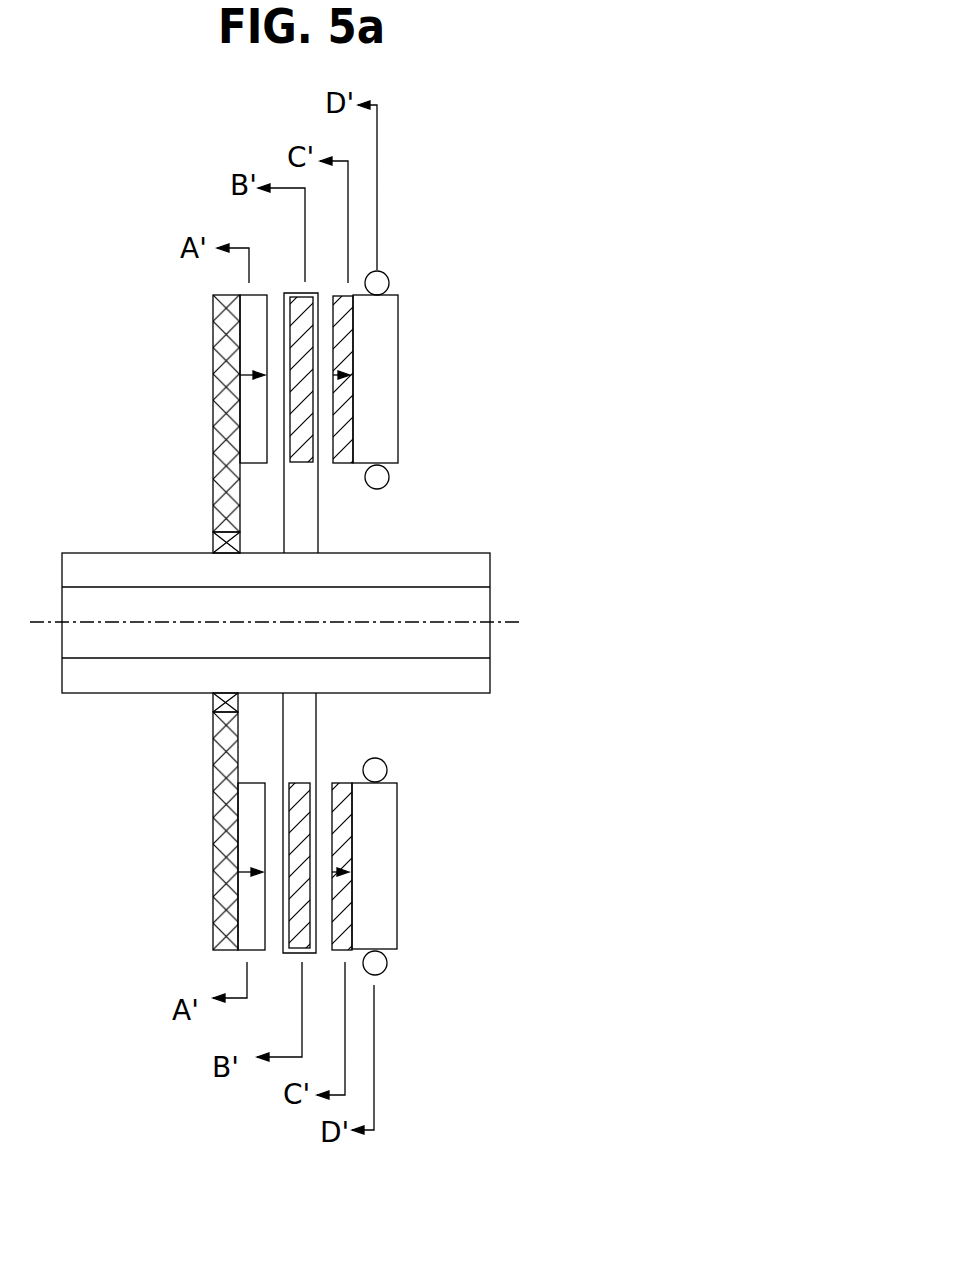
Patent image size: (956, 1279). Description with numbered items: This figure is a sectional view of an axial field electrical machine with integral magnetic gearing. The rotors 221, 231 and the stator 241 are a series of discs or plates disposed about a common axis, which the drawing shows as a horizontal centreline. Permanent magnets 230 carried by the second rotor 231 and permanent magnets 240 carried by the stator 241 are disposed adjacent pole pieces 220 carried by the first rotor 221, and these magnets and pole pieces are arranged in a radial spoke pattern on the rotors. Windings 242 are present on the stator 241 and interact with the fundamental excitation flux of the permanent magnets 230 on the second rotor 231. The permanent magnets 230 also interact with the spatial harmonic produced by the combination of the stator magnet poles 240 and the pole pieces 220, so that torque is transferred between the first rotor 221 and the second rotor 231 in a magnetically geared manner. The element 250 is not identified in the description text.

The pole pieces 220 is at (305, 455).
The first rotor 221 is at (300, 728).
The permanent magnets 230 is at (248, 357).
The second rotor 231 is at (203, 470).
The permanent magnets 240 is at (348, 357).
The stator 241 is at (388, 415).
The windings 242 is at (388, 279).
The shaft 250 is at (474, 564).